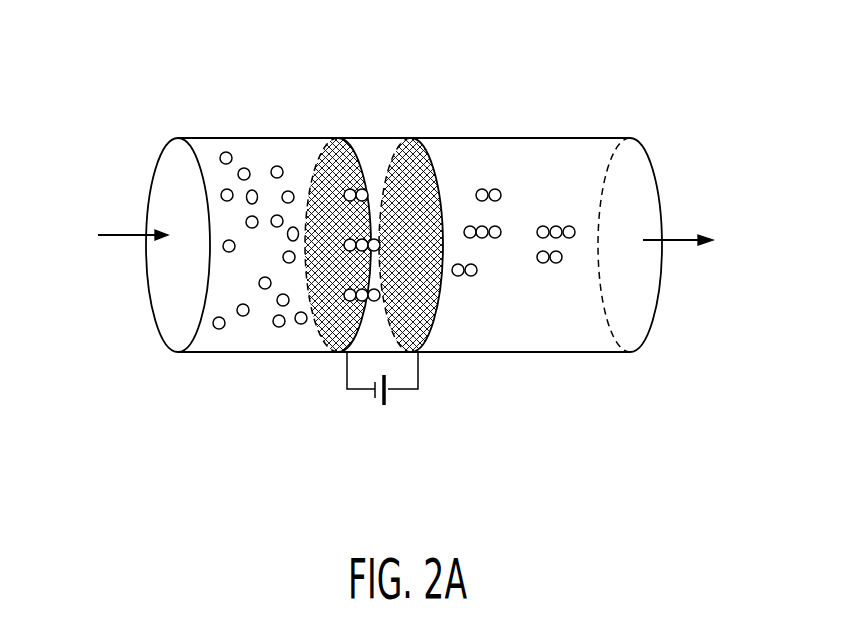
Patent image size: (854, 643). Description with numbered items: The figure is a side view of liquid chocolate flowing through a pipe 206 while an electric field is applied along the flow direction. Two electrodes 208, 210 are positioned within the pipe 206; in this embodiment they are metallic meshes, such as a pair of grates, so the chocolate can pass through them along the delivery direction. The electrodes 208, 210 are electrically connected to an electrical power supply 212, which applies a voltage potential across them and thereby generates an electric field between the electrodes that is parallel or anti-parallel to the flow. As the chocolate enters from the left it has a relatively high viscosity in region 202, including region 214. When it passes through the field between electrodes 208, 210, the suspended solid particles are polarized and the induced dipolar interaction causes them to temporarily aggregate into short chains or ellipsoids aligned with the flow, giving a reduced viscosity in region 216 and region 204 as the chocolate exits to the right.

The high viscosity region 202 is at (115, 235).
The reduced viscosity region 204 is at (679, 238).
The pipe 206 is at (220, 138).
The electrode 208 is at (343, 138).
The electrode 210 is at (408, 138).
The electrical power supply 212 is at (387, 413).
The high viscosity region 214 is at (266, 413).
The reduced viscosity region 216 is at (591, 412).